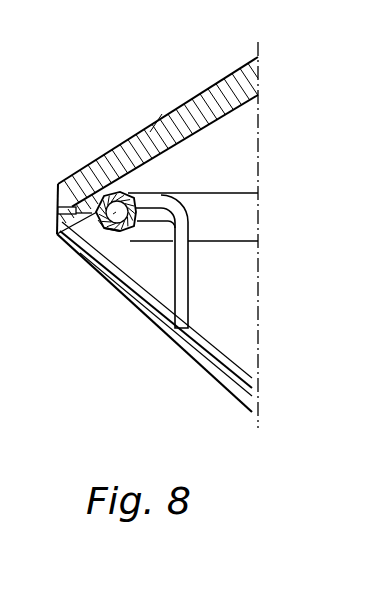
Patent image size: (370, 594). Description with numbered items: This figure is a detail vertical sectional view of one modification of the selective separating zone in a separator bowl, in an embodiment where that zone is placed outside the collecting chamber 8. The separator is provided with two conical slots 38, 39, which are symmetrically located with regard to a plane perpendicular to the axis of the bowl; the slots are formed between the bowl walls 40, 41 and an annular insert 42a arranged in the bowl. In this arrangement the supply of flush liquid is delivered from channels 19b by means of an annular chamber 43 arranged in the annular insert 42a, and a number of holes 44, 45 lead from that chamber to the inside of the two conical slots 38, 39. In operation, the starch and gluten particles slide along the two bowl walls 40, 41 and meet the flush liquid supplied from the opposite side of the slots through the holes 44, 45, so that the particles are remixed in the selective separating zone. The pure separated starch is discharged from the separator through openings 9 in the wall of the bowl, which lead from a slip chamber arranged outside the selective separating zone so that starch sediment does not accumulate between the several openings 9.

The collecting chamber 8 is at (232, 303).
The openings 9 is at (60, 210).
The channels 19b is at (181, 278).
The conical slot 38 is at (106, 233).
The conical slot 39 is at (104, 190).
The bowl wall 40 is at (163, 312).
The bowl wall 41 is at (116, 158).
The annular insert 42a is at (152, 130).
The annular chamber 43 is at (95, 213).
The holes 44 is at (106, 234).
The holes 45 is at (77, 191).